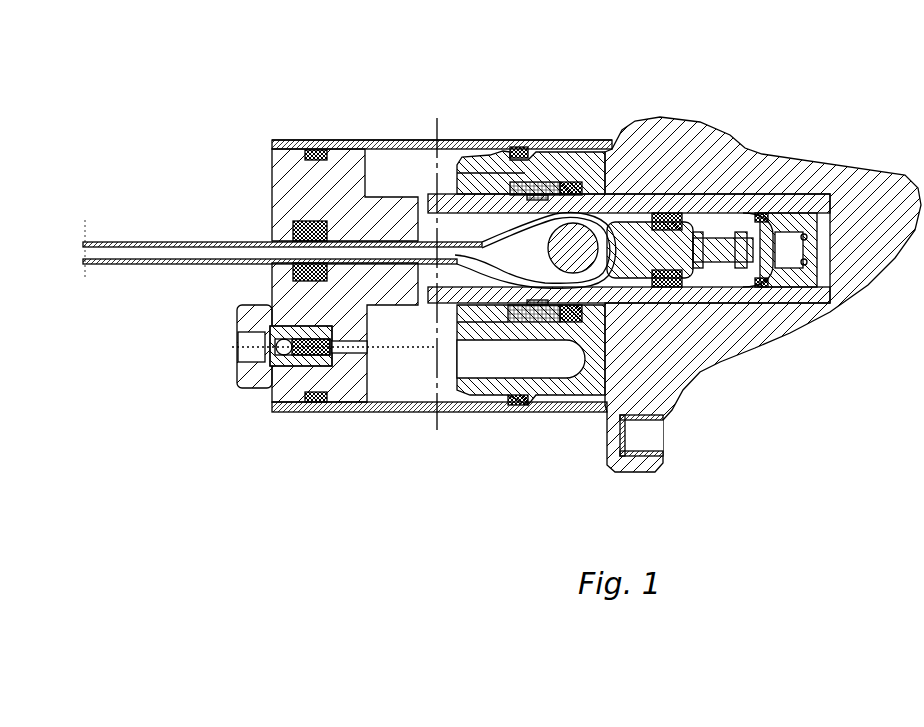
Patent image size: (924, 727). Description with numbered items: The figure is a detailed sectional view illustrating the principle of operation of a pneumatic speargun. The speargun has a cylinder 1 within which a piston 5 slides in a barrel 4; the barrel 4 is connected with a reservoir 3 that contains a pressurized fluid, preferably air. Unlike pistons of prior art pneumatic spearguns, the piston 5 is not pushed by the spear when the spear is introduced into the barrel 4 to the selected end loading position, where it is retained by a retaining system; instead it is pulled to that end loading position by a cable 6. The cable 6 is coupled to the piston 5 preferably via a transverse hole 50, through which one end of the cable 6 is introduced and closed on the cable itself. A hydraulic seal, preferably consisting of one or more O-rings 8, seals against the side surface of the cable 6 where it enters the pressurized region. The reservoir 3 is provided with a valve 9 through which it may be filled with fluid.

The cylinder 1 is at (372, 140).
The reservoir 3 is at (397, 390).
The barrel 4 is at (492, 223).
The piston 5 is at (633, 226).
The cable 6 is at (110, 255).
The O-rings 8 is at (272, 268).
The valve 9 is at (250, 350).
The transverse hole 50 is at (688, 396).